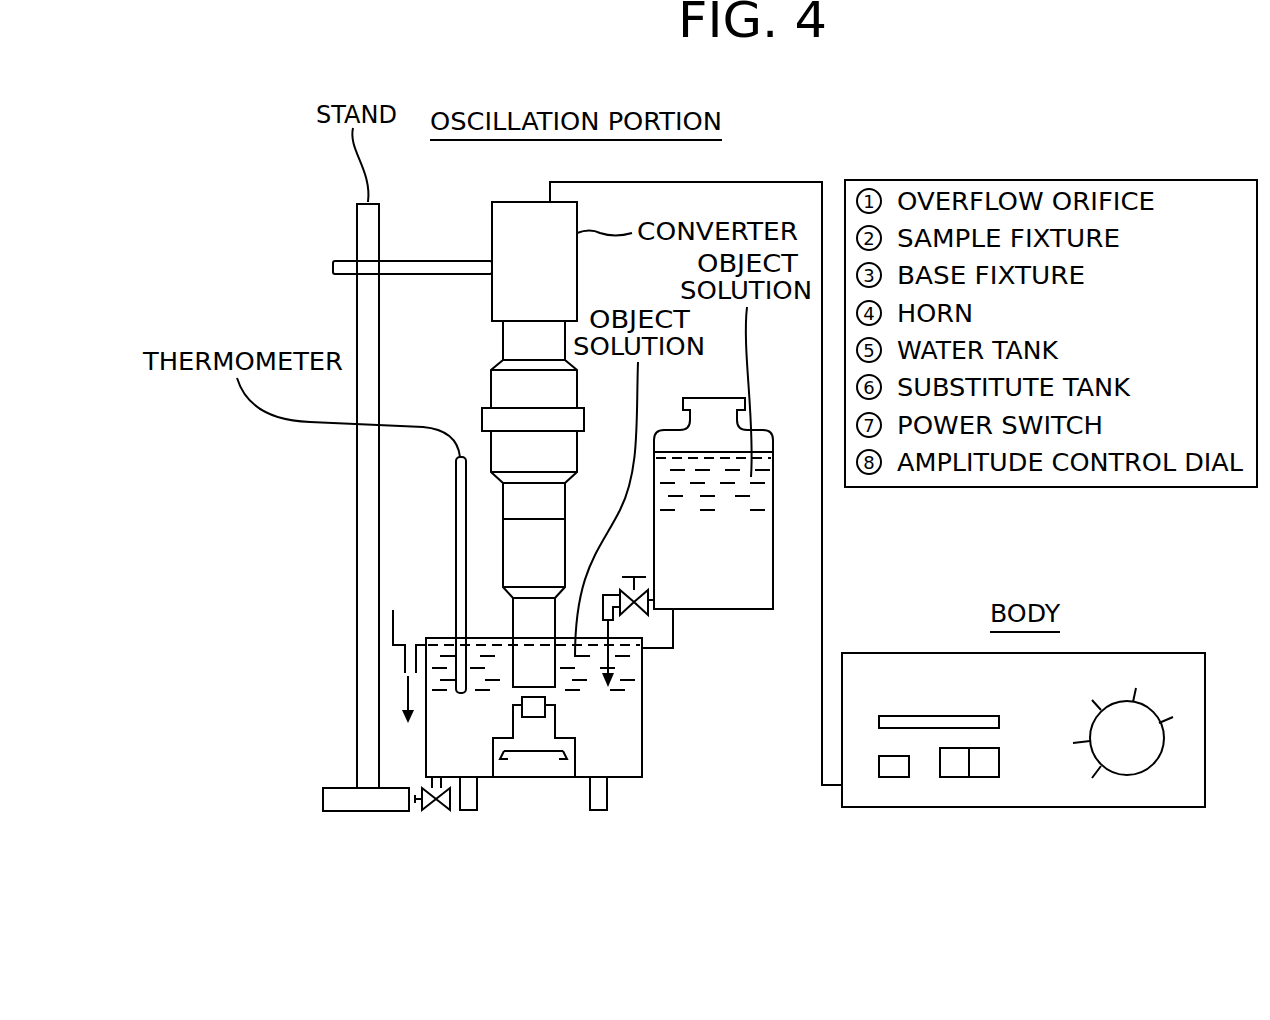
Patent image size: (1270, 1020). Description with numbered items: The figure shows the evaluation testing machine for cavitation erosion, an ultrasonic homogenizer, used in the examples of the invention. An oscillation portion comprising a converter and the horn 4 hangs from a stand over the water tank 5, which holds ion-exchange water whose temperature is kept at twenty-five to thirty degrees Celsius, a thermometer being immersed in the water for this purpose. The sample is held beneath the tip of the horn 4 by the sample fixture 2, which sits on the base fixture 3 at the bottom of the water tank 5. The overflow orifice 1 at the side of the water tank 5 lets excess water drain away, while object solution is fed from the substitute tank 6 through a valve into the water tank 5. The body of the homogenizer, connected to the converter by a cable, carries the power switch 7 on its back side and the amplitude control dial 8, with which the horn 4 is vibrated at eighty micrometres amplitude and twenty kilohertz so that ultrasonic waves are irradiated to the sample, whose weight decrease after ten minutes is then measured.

The overflow orifice 1 is at (405, 678).
The sample fixture 2 is at (523, 728).
The base fixture 3 is at (539, 770).
The horn 4 is at (560, 692).
The water tank 5 is at (642, 707).
The substitute tank 6 is at (718, 609).
The power switch 7 is at (1022, 807).
The amplitude control dial 8 is at (1123, 777).